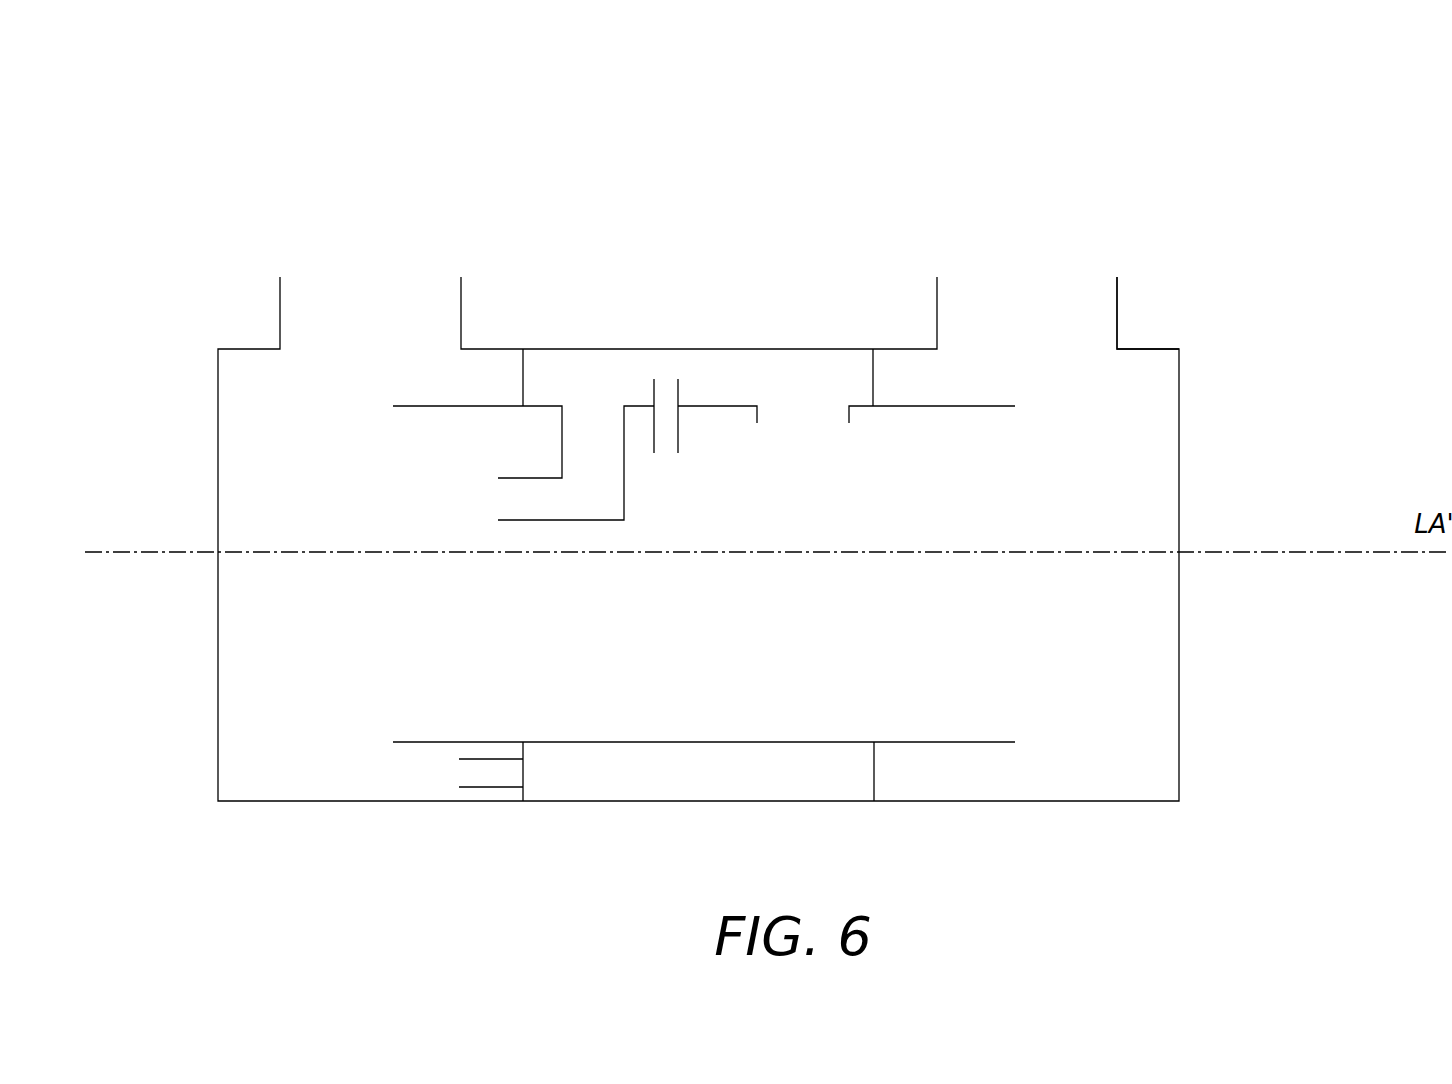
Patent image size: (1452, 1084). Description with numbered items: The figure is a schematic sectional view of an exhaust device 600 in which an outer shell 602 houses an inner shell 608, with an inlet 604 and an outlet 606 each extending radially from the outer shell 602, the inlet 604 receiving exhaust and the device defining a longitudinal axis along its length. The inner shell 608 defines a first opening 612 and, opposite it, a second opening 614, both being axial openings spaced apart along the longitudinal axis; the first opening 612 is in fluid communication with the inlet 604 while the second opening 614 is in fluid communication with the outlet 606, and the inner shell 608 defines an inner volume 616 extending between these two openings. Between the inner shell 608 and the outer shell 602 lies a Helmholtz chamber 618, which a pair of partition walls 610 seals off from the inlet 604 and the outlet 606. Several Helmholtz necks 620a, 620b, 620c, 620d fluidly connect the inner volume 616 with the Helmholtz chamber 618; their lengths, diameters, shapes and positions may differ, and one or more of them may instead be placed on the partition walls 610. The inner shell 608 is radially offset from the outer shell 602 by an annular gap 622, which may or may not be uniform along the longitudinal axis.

The exhaust device 600 is at (1093, 104).
The outer shell 602 is at (915, 802).
The inlet 604 is at (462, 300).
The outlet 606 is at (1117, 313).
The inner shell 608 is at (818, 742).
The partition walls 610 is at (523, 372).
The first opening 612 is at (382, 517).
The second opening 614 is at (1036, 485).
The inner volume 616 is at (464, 667).
The Helmholtz chamber 618 is at (813, 387).
The Helmholtz neck 620a is at (624, 415).
The Helmholtz neck 620b is at (654, 412).
The Helmholtz neck 620c is at (757, 415).
The Helmholtz neck 620d is at (483, 787).
The annular gap 622 is at (644, 764).